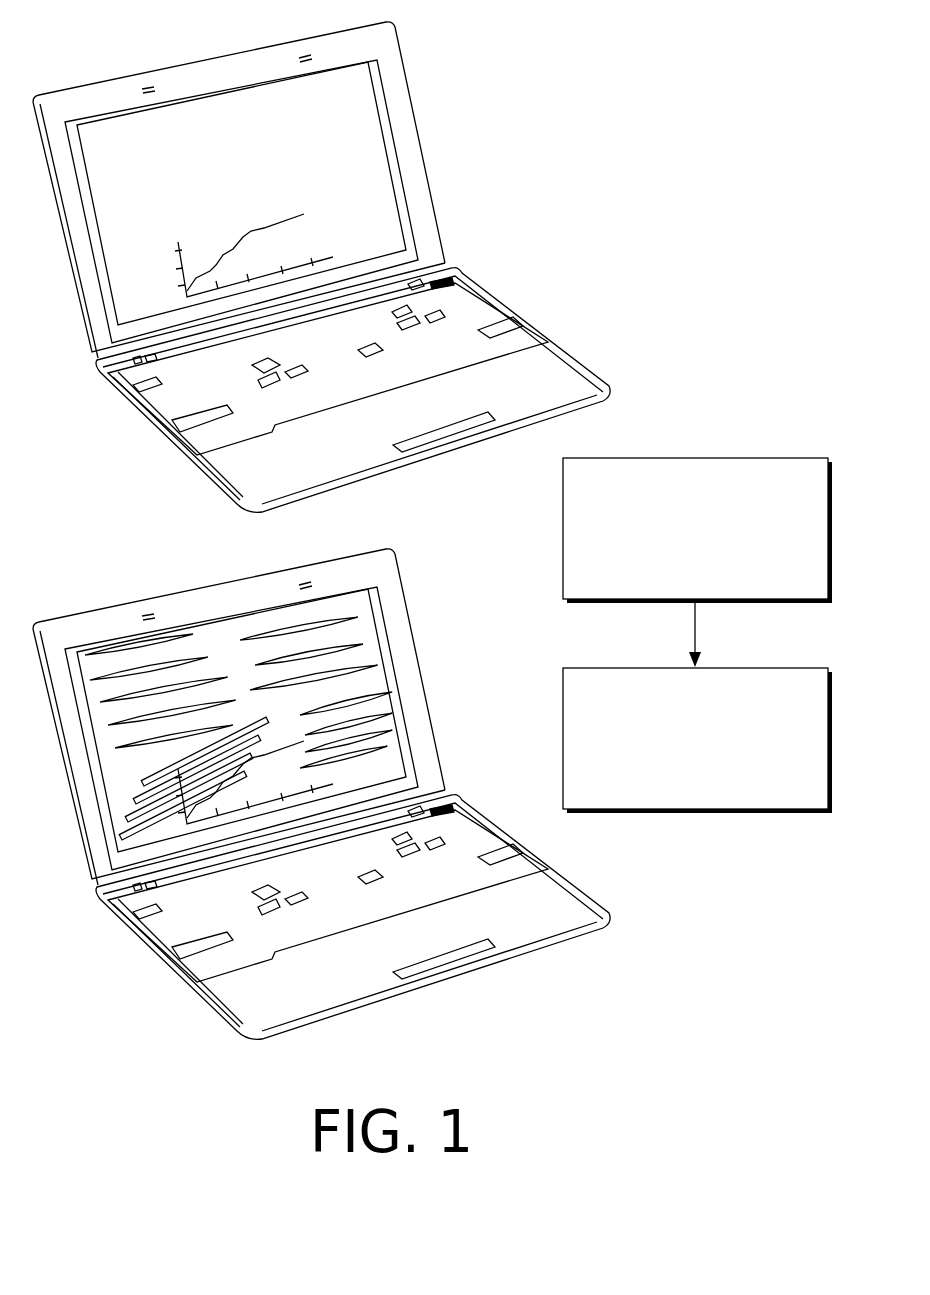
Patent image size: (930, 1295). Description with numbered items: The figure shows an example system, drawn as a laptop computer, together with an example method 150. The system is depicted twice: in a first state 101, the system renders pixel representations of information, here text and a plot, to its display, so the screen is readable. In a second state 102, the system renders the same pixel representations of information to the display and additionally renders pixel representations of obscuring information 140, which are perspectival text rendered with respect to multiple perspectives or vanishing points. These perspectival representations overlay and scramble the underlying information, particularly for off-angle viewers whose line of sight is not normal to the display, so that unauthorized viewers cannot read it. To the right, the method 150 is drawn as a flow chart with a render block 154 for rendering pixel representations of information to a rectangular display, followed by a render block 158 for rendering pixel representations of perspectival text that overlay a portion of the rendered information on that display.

The first state 101 is at (440, 46).
The second state 102 is at (420, 546).
The pixel representations of obscuring information 140 is at (378, 654).
The method 150 is at (697, 617).
The render block 154 is at (697, 530).
The render block 158 is at (697, 740).